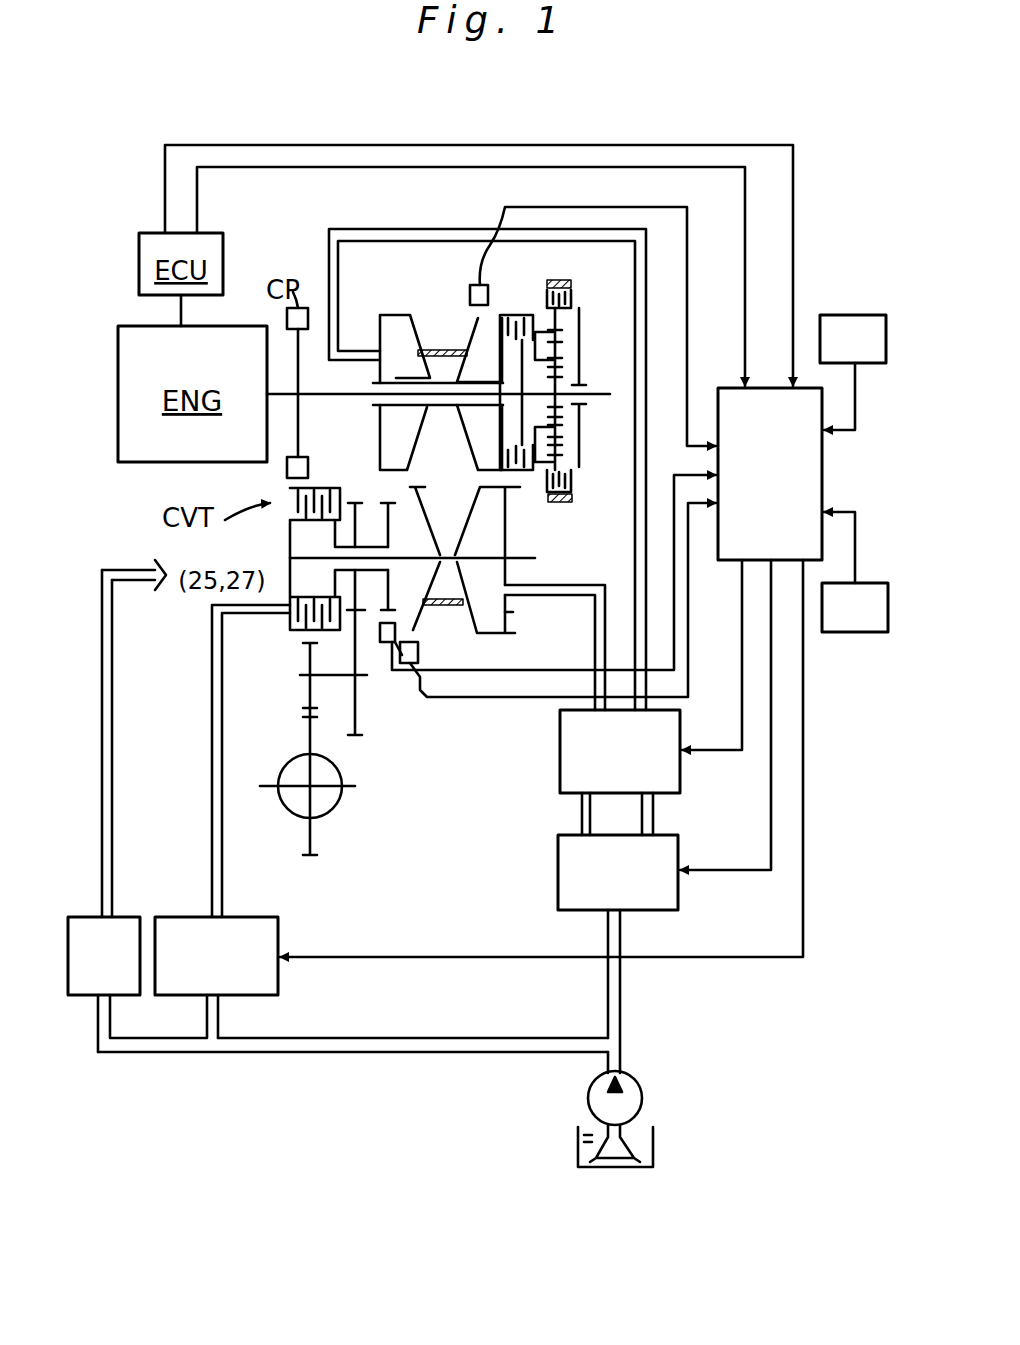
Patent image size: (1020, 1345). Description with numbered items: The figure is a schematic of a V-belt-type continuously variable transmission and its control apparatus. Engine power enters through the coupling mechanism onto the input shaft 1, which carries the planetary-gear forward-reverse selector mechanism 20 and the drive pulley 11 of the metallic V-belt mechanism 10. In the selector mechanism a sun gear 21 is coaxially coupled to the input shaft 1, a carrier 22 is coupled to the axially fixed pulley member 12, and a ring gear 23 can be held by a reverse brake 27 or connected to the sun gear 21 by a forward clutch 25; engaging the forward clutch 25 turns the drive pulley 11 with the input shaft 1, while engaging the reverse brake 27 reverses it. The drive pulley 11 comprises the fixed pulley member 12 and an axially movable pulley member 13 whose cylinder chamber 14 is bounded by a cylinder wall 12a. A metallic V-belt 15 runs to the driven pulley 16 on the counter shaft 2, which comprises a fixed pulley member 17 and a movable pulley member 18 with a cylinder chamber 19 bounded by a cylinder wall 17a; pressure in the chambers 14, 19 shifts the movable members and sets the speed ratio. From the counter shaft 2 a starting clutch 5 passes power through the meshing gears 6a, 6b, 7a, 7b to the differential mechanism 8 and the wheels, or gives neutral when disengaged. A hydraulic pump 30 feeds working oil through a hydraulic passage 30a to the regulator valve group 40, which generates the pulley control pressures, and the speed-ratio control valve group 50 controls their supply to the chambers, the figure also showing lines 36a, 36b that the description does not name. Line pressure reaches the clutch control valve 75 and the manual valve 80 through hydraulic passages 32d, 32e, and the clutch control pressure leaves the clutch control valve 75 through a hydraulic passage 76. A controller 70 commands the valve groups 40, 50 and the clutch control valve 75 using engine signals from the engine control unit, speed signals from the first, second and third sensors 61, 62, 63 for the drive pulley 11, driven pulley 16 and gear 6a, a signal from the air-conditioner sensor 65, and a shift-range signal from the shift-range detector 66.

The input shaft 1 is at (328, 402).
The counter shaft 2 is at (400, 560).
The starting clutch 5 is at (320, 488).
The meshing gear 6a is at (360, 503).
The meshing gear 6b is at (363, 740).
The meshing gear 7a is at (303, 645).
The meshing gear 7b is at (313, 857).
The differential mechanism 8 is at (336, 800).
The metallic V-belt mechanism 10 is at (437, 564).
The drive pulley 11 is at (398, 358).
The axially fixed pulley member 12 is at (474, 328).
The cylinder wall 12a is at (373, 368).
The pulley member 13 is at (385, 313).
The cylinder chamber 14 is at (405, 392).
The metallic V-belt 15 is at (435, 541).
The driven pulley 16 is at (524, 629).
The fixed pulley member 17 is at (417, 549).
The cylinder wall 17a is at (514, 612).
The pulley member 18 is at (446, 510).
The cylinder chamber 19 is at (487, 560).
The planetary-gear forward-reverse selector mechanism 20 is at (588, 374).
The sun gear 21 is at (588, 386).
The carrier 22 is at (580, 426).
The ring gear 23 is at (584, 462).
The forward clutch 25 is at (519, 316).
The reverse brake 27 is at (575, 300).
The hydraulic pump 30 is at (644, 1094).
The hydraulic passage 30a is at (624, 992).
The hydraulic passage 32d is at (383, 1038).
The hydraulic passage 32e is at (160, 1052).
The primary pressure line 36a is at (420, 229).
The secondary pressure line 36b is at (604, 583).
The group of regulator valves 40 is at (618, 872).
The group of speed-ratio control valves 50 is at (620, 751).
The first sensor 61 is at (470, 292).
The second sensor 62 is at (418, 653).
The third sensor 63 is at (380, 640).
The air-conditioner sensor 65 is at (852, 315).
The shift-range detector 66 is at (855, 634).
The controller 70 is at (770, 474).
The clutch control valve 75 is at (216, 956).
The hydraulic passage 76 is at (212, 830).
The manual valve 80 is at (104, 782).